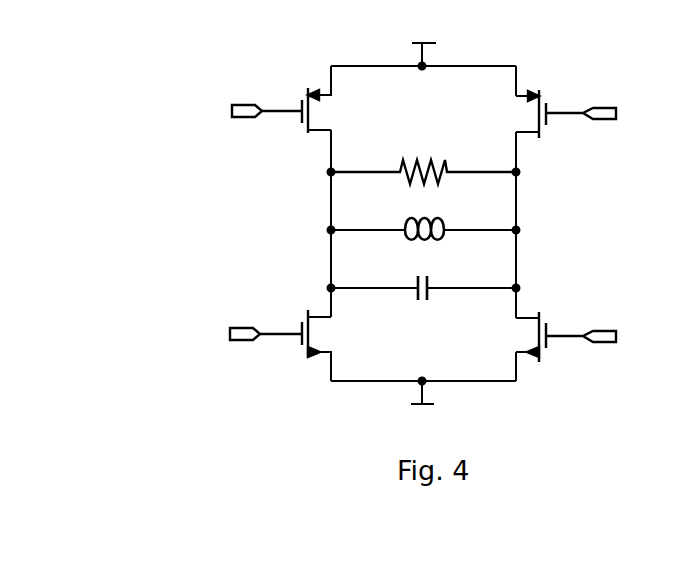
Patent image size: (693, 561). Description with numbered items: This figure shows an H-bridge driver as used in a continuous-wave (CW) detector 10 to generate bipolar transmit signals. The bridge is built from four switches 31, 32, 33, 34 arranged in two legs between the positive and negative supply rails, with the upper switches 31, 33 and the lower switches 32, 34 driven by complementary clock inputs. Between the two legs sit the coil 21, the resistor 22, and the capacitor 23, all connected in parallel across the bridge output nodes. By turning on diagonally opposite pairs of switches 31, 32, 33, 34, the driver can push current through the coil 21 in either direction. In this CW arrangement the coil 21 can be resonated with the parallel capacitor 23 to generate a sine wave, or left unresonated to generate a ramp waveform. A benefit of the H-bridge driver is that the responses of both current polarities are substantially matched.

The CW detector 10 is at (227, 190).
The coil 21 is at (423, 213).
The resistor 22 is at (423, 157).
The capacitor 23 is at (422, 268).
The switch 31 is at (332, 117).
The switch 32 is at (329, 338).
The switch 33 is at (515, 120).
The switch 34 is at (515, 341).